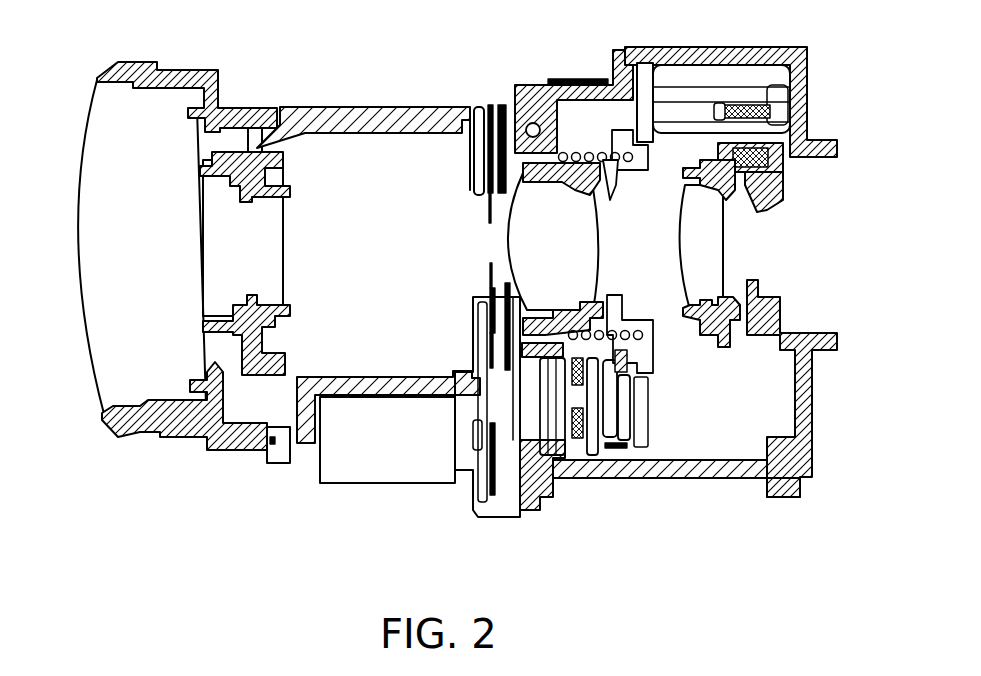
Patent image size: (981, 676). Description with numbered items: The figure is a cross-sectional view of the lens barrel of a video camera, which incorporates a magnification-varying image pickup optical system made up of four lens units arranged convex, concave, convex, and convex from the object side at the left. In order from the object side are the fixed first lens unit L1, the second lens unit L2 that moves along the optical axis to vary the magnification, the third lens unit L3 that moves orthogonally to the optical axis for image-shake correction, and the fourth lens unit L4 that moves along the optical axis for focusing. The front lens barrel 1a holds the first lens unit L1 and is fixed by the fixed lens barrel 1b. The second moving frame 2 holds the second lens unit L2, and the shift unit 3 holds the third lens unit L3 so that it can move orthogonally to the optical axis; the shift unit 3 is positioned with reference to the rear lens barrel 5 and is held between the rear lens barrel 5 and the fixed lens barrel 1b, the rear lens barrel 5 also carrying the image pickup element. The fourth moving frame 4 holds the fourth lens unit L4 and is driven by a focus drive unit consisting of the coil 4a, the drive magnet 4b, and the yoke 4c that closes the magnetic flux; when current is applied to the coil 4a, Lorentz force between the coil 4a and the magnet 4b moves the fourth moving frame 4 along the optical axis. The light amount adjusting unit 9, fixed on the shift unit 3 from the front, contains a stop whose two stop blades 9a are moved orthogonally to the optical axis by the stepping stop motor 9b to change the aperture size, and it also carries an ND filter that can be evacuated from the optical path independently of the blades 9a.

The front lens barrel 1a is at (201, 69).
The fixed lens barrel 1b is at (381, 107).
The second moving frame 2 is at (253, 148).
The shift unit 3 is at (538, 85).
The fourth moving frame 4 is at (750, 350).
The coil 4a is at (745, 106).
The drive magnet 4b is at (742, 90).
The yoke 4c is at (688, 50).
The rear lens barrel 5 is at (787, 486).
The light amount adjusting unit 9 is at (512, 348).
The stop blades 9a is at (487, 290).
The stop motor 9b is at (440, 472).
The first lens unit L1 is at (118, 243).
The second lens unit L2 is at (270, 229).
The third lens unit L3 is at (522, 250).
The fourth lens unit L4 is at (712, 247).